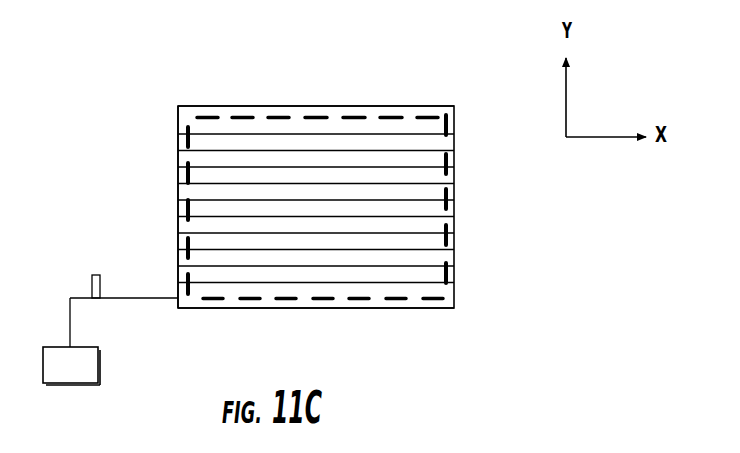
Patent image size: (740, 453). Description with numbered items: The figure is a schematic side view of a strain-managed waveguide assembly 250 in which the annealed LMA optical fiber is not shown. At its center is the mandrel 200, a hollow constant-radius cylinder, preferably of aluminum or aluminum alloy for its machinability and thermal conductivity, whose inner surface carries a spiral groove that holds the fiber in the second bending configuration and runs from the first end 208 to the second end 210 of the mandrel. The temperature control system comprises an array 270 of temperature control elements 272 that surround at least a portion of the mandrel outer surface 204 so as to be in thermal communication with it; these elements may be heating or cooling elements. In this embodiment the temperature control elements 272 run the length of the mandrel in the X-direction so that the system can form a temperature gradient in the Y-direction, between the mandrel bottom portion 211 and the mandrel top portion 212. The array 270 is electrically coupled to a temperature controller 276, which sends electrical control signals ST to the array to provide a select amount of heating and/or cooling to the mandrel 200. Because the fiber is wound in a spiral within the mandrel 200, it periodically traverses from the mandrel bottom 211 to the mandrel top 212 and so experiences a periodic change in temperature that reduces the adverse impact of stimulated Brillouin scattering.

The strain-managed waveguide assembly 250 is at (188, 43).
The mandrel 200 is at (438, 116).
The outer surface 204 is at (378, 105).
The mandrel top portion 212 is at (184, 90).
The array 270 is at (265, 94).
The temperature control elements 272 is at (348, 148).
The first end 208 is at (180, 210).
The second end 210 is at (448, 205).
The mandrel bottom portion 211 is at (377, 310).
The electrical control signals ST is at (92, 280).
The temperature controller 276 is at (85, 378).